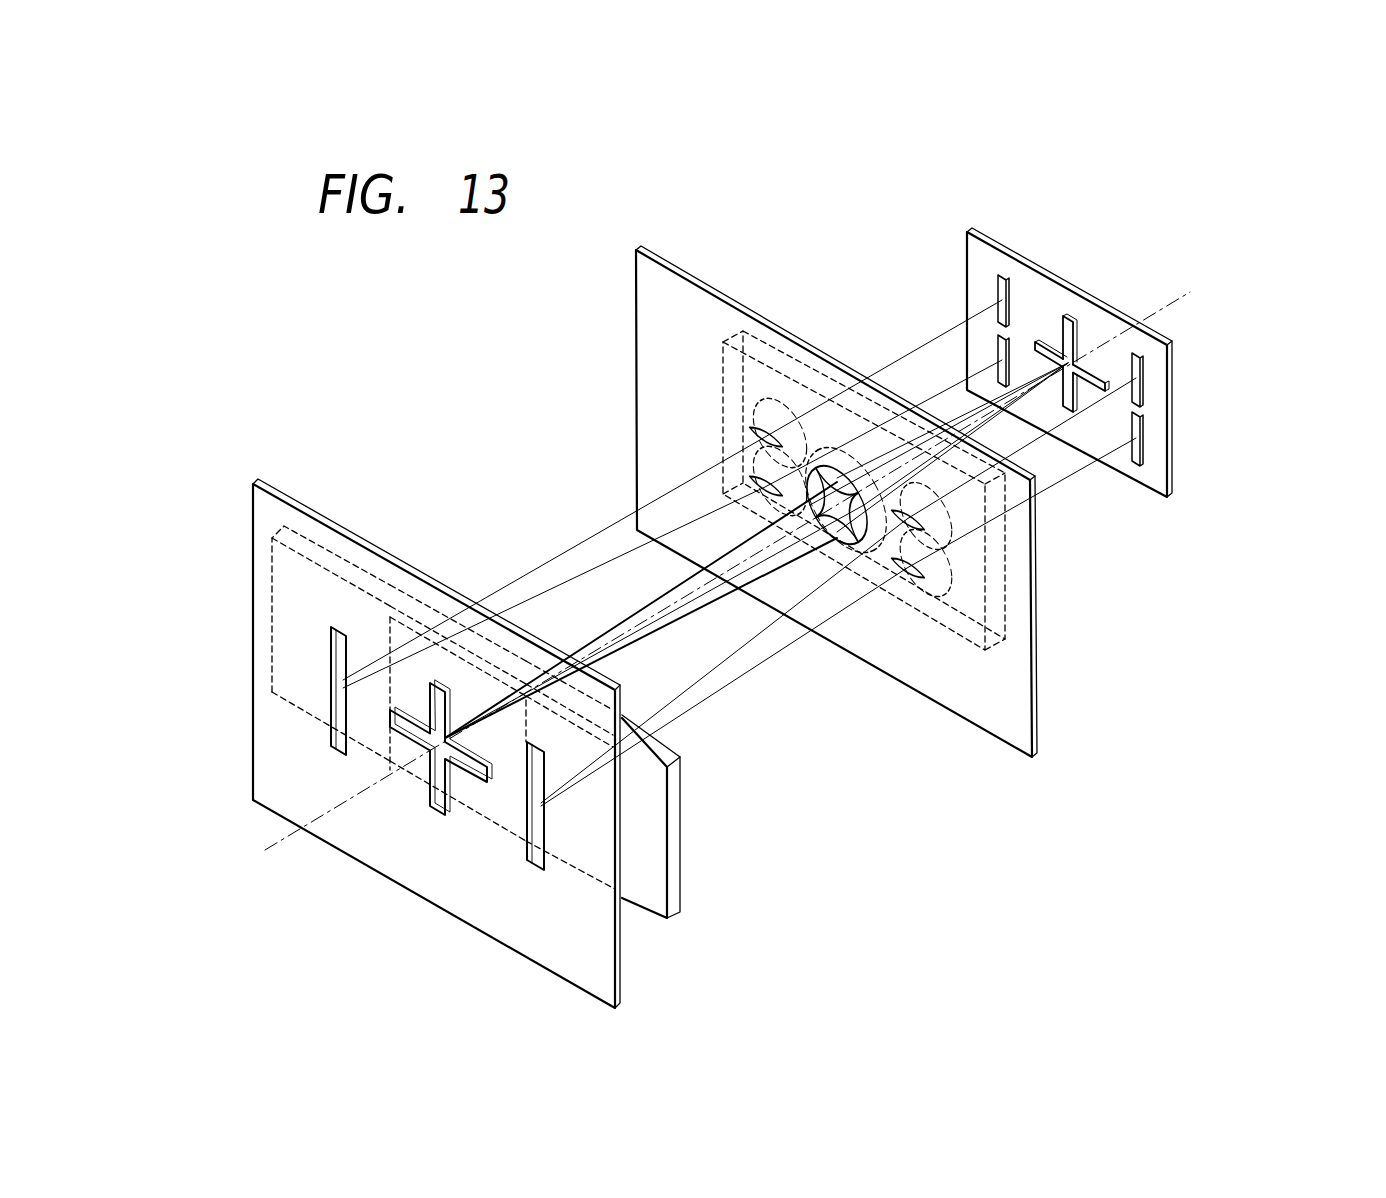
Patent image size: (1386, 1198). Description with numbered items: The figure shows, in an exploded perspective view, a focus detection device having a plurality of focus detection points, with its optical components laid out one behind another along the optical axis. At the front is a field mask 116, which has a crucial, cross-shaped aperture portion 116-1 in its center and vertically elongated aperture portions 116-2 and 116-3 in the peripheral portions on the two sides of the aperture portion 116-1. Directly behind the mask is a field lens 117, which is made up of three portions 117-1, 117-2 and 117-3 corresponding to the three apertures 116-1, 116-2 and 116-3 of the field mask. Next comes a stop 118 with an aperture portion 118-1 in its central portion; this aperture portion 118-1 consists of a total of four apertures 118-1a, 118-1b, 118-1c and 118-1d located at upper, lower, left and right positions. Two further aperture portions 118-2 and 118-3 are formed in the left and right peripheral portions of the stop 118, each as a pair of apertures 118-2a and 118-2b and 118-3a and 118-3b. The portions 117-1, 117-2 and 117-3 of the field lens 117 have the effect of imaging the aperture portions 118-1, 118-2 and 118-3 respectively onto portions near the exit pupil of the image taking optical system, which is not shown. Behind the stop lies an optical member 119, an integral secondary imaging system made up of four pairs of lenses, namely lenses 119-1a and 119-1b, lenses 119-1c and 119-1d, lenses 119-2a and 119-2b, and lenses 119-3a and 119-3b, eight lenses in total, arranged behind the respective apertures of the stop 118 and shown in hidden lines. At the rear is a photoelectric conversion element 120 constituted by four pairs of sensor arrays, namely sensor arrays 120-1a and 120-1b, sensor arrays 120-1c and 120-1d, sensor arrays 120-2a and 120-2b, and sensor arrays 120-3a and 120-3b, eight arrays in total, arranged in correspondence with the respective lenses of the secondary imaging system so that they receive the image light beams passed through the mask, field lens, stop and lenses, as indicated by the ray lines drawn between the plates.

The field mask 116 is at (483, 744).
The crucial aperture portion 116-1 is at (383, 790).
The vertically elongated aperture portion 116-2 is at (456, 851).
The vertically elongated aperture portion 116-3 is at (260, 732).
The field lens 117 is at (693, 826).
The field lens portion 117-1 is at (458, 686).
The field lens portion 117-2 is at (661, 775).
The field lens portion 117-3 is at (307, 575).
The stop 118 is at (890, 521).
The aperture portion 118-1 is at (725, 442).
The aperture 118-1a is at (810, 363).
The aperture 118-1b is at (760, 578).
The aperture 118-1c is at (810, 591).
The aperture 118-1d is at (704, 529).
The aperture portion 118-2 is at (914, 685).
The aperture 118-2a is at (942, 660).
The aperture 118-2b is at (877, 686).
The aperture portion 118-3 is at (607, 446).
The aperture 118-3a is at (648, 423).
The aperture 118-3b is at (648, 466).
The optical member 119 is at (944, 542).
The lens 119-1a is at (858, 370).
The lens 119-1b is at (828, 631).
The lens 119-1c is at (906, 433).
The lens 119-1d is at (766, 387).
The lens 119-2a is at (1036, 539).
The lens 119-2b is at (1031, 595).
The lens 119-3a is at (673, 381).
The lens 119-3b is at (658, 421).
The photoelectric conversion element 120 is at (1126, 371).
The sensor array 120-1a is at (1121, 291).
The sensor array 120-1b is at (1107, 464).
The sensor array 120-1c is at (1190, 474).
The sensor array 120-1d is at (1041, 288).
The sensor array 120-2a is at (1225, 380).
The sensor array 120-2b is at (1225, 439).
The sensor array 120-3a is at (938, 231).
The sensor array 120-3b is at (919, 276).